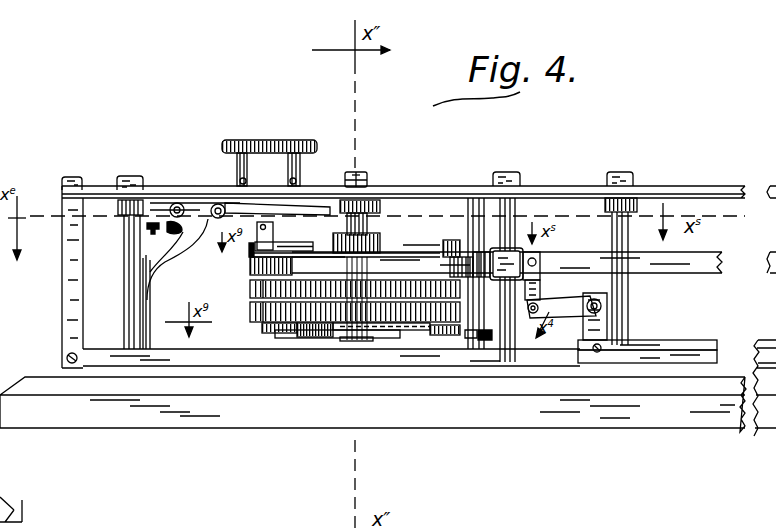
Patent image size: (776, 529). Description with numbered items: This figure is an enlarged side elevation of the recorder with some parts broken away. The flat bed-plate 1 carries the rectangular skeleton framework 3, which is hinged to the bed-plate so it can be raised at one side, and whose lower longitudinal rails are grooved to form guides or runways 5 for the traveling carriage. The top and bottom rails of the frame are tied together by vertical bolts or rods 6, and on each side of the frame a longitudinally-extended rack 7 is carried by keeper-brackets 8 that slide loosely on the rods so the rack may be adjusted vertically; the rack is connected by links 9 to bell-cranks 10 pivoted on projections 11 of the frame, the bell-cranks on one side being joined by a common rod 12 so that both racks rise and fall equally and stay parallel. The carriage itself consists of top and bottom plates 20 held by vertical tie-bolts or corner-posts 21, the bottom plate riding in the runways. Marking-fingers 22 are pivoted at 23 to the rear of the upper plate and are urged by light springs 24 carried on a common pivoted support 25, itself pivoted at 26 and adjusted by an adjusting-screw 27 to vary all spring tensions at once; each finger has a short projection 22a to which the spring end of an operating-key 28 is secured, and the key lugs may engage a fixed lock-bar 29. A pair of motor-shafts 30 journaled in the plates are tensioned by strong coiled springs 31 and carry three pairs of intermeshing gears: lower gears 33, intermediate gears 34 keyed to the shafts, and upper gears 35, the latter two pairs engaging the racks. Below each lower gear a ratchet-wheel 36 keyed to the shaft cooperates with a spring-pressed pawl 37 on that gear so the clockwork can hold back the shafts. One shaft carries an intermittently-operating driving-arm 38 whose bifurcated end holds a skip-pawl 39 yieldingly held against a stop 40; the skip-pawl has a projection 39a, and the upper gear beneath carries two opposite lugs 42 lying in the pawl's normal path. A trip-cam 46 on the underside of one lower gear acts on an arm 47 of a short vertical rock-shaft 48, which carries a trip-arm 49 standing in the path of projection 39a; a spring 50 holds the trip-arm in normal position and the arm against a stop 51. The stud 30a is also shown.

The bed-plate 1 is at (273, 410).
The skeleton framework 3 is at (68, 286).
The guides or runways 5 is at (220, 357).
The bolts or rods 6 is at (505, 220).
The rack 7 is at (710, 263).
The keeper-brackets 8 is at (510, 262).
The links 9 is at (549, 288).
The bell-cranks 10 is at (595, 298).
The projections 11 is at (607, 330).
The link or rod 12 is at (703, 343).
The top and bottom plates 20 is at (598, 197).
The tie-bolts or corner-posts 21 is at (125, 332).
The marking-fingers 22 is at (130, 287).
The projection 22a is at (237, 215).
The pivot 23 is at (217, 204).
The springs 24 is at (147, 257).
The pivoted support 25 is at (135, 222).
The pivot 26 is at (178, 203).
The adjusting-screw 27 is at (163, 238).
The operating-key 28 is at (240, 143).
The lock-bar 29 is at (266, 173).
The motor-shafts 30 is at (370, 188).
The stud 30a is at (358, 174).
The coiled springs 31 is at (372, 347).
The lower gears 33 is at (252, 315).
The intermediate gears 34 is at (250, 288).
The upper gears 35 is at (250, 266).
The ratchet-wheel 36 is at (401, 337).
The spring-pressed pawl 37 is at (314, 347).
The driving-arm 38 is at (318, 245).
The skip-pawl 39 is at (292, 251).
The projection 39a is at (318, 264).
The stop 40 is at (258, 253).
The lugs or projections 42 is at (328, 263).
The trip-cam 46 is at (280, 335).
The arm 47 is at (445, 340).
The rock-shaft 48 is at (408, 245).
The trip-arm 49 is at (460, 256).
The spring 50 is at (490, 332).
The stop 51 is at (467, 337).